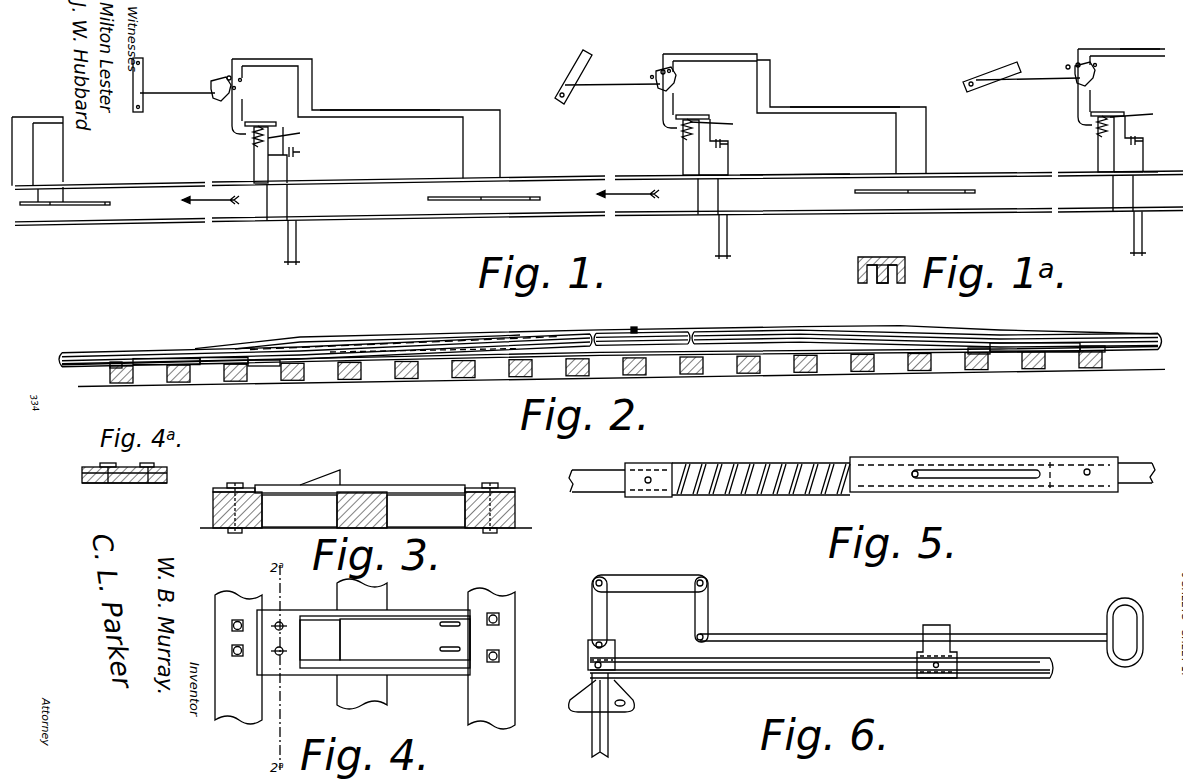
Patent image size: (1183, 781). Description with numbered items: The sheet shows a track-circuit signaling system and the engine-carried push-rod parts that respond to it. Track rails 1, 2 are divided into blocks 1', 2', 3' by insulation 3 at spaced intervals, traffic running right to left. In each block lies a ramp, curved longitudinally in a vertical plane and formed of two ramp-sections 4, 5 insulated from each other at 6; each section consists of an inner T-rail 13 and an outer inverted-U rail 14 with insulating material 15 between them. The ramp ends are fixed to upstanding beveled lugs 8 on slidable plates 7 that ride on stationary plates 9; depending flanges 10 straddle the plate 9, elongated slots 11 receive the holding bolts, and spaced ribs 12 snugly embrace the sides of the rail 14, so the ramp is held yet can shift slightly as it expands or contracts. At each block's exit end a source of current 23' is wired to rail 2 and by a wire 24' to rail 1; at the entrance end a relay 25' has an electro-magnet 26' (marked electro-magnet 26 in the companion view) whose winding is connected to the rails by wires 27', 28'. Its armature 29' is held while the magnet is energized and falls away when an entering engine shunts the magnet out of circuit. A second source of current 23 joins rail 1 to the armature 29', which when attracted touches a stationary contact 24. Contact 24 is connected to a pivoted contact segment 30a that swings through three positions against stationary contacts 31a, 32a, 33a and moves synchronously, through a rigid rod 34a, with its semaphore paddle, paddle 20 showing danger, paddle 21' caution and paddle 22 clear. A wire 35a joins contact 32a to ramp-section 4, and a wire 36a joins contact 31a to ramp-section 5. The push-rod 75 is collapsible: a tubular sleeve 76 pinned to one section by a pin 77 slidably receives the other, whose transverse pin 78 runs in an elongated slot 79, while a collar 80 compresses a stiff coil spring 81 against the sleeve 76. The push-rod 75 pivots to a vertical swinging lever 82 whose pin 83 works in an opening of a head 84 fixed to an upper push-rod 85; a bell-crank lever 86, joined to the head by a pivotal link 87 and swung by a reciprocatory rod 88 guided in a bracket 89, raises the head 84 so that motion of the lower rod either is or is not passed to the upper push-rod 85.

In FIG. 1, the track rail 1 is at (611, 167).
In FIG. 1A, the track rail 1 is at (1120, 173).
In FIG. 2, the track rail 1 is at (365, 384).
In FIG. 1, the block 1' is at (110, 198).
In FIG. 1, the track rail 2 is at (533, 232).
In FIG. 1A, the track rail 2 is at (1120, 209).
In FIG. 1, the block 2' is at (408, 206).
In FIG. 1, the insulation 3 is at (492, 200).
In FIG. 1A, the insulation 3 is at (1123, 194).
In FIG. 1, the block 3' is at (795, 186).
In FIG. 1, the ramp-section 4 is at (30, 205).
In FIG. 2, the ramp-section 4 is at (483, 338).
In FIG. 1, the ramp-section 5 is at (100, 205).
In FIG. 2, the ramp-section 5 is at (781, 330).
In FIG. 1, the insulation 6 is at (53, 205).
In FIG. 2, the insulation 6 is at (635, 327).
In FIG. 4A, the slidable plate 7 is at (168, 474).
In FIG. 4, the slidable plate 7 is at (296, 677).
In FIG. 3, the upstanding beveled lug 8 is at (328, 478).
In FIG. 4, the upstanding beveled lug 8 is at (320, 640).
In FIG. 2, the stationary plate 9 is at (118, 362).
In FIG. 4A, the stationary plate 9 is at (150, 484).
In FIG. 3, the stationary plate 9 is at (221, 488).
In FIG. 4, the stationary plate 9 is at (365, 658).
In FIG. 2, the depending flange 10 is at (165, 366).
In FIG. 4A, the depending flange 10 is at (168, 485).
In FIG. 3, the depending flange 10 is at (286, 496).
In FIG. 4, the depending flange 10 is at (320, 675).
In FIG. 4A, the elongated slot 11 is at (138, 467).
In FIG. 4, the elongated slot 11 is at (283, 622).
In FIG. 2, the longitudinal spaced rib 12 is at (198, 365).
In FIG. 3, the longitudinal spaced rib 12 is at (410, 484).
In FIG. 4, the longitudinal spaced rib 12 is at (417, 620).
In FIG. 1, the inner T-rail 13 is at (882, 283).
In FIG. 2, the inner T-rail 13 is at (525, 333).
In FIG. 1, the outer rail 14 is at (862, 264).
In FIG. 2, the outer rail 14 is at (430, 336).
In FIG. 1, the insulating material 15 is at (882, 258).
In FIG. 1, the semaphore paddle 20 is at (143, 60).
In FIG. 1, the semaphore paddle 21' is at (572, 63).
In FIG. 1A, the semaphore paddle 22 is at (1006, 68).
In FIG. 1, the source of current 23 is at (526, 148).
In FIG. 1A, the source of current 23 is at (1153, 134).
In FIG. 1, the source of current 23' is at (499, 272).
In FIG. 1A, the source of current 23' is at (1131, 266).
In FIG. 1, the stationary contact 24 is at (444, 101).
In FIG. 1A, the stationary contact 24 is at (1062, 95).
In FIG. 1, the wire 24' is at (492, 237).
In FIG. 1A, the wire 24' is at (1123, 231).
In FIG. 1, the relay 25' is at (457, 139).
In FIG. 1A, the relay 25' is at (1086, 131).
In FIG. 1A, the electro-magnet 26 is at (1141, 118).
In FIG. 1, the electro-magnet 26' is at (513, 129).
In FIG. 1, the wire 27' is at (459, 151).
In FIG. 1A, the wire 27' is at (1089, 144).
In FIG. 1, the wire 28' is at (498, 151).
In FIG. 1A, the wire 28' is at (1132, 144).
In FIG. 1, the armature 29' is at (477, 105).
In FIG. 1A, the armature 29' is at (1113, 100).
In FIG. 1, the contact segment 30a is at (230, 105).
In FIG. 1A, the contact segment 30a is at (1096, 67).
In FIG. 1, the stationary contact 31a is at (242, 80).
In FIG. 1A, the stationary contact 31a is at (1097, 65).
In FIG. 1, the stationary contact 32a is at (236, 88).
In FIG. 1A, the stationary contact 32a is at (1078, 63).
In FIG. 1, the stationary contact 33a is at (227, 78).
In FIG. 1A, the stationary contact 33a is at (1054, 62).
In FIG. 1, the rigid rod 34a is at (170, 93).
In FIG. 1A, the rigid rod 34a is at (1028, 90).
In FIG. 1, the wire 35a is at (267, 59).
In FIG. 1A, the wire 35a is at (1110, 49).
In FIG. 1, the wire 36a is at (365, 110).
In FIG. 1A, the wire 36a is at (1140, 56).
In FIG. 5, the push-rod 75 is at (598, 489).
In FIG. 5, the tubular sleeve 76 is at (882, 470).
In FIG. 5, the pin 77 is at (1087, 469).
In FIG. 5, the transverse pin 78 is at (919, 472).
In FIG. 5, the elongated slot 79 is at (990, 470).
In FIG. 5, the collar 80 is at (646, 468).
In FIG. 5, the coil spring 81 is at (790, 463).
In FIG. 6, the vertical swinging lever 82 is at (610, 740).
In FIG. 6, the laterally extending pin 83 is at (590, 671).
In FIG. 6, the head 84 is at (570, 706).
In FIG. 6, the upper push-rod 85 is at (755, 672).
In FIG. 6, the bell-crank lever 86 is at (661, 578).
In FIG. 6, the pivotal link 87 is at (598, 606).
In FIG. 6, the reciprocatory rod 88 is at (804, 633).
In FIG. 6, the bracket 89 is at (935, 627).